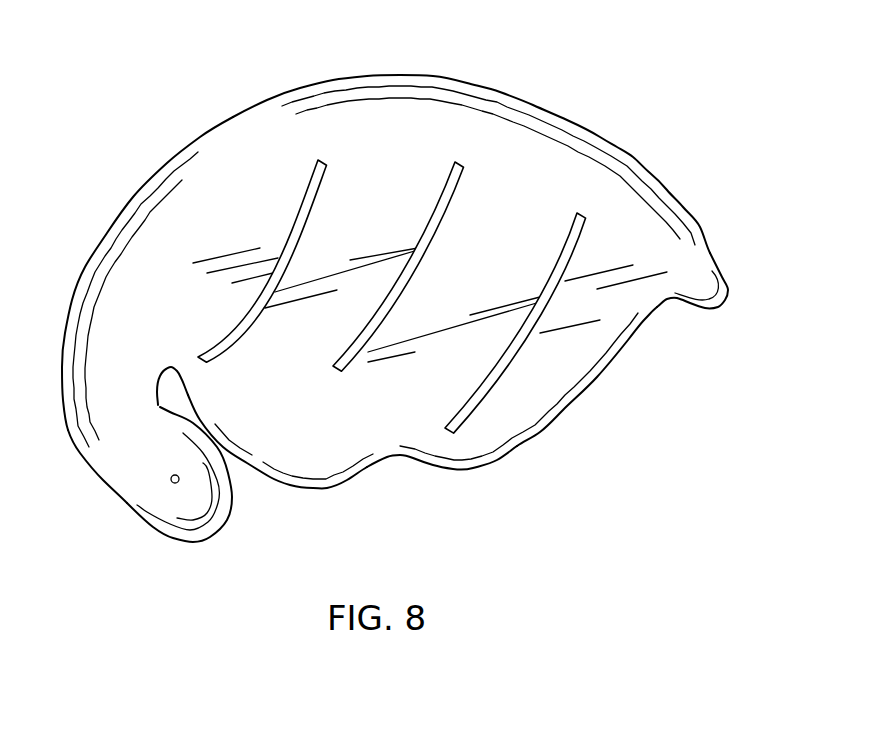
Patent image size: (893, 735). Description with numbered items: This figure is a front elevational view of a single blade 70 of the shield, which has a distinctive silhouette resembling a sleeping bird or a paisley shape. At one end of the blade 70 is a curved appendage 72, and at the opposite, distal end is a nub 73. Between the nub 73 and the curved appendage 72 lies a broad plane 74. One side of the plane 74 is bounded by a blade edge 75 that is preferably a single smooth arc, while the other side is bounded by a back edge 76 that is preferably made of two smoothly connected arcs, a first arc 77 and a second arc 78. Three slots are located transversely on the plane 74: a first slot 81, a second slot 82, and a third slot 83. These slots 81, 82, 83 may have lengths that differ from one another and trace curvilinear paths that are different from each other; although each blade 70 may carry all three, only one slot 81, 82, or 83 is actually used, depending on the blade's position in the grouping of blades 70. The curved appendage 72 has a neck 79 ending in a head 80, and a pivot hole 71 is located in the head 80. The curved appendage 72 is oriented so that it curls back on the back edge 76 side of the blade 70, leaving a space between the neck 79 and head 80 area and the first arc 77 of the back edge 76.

The blade 70 is at (406, 300).
The pivot hole 71 is at (170, 484).
The curved appendage 72 is at (112, 466).
The nub 73 is at (731, 293).
The broad plane 74 is at (133, 270).
The blade edge 75 is at (402, 74).
The back edge 76 is at (592, 378).
The first arc 77 is at (325, 490).
The second arc 78 is at (486, 470).
The neck 79 is at (158, 400).
The head 80 is at (212, 508).
The first slot 81 is at (307, 192).
The second slot 82 is at (443, 193).
The third slot 83 is at (560, 250).